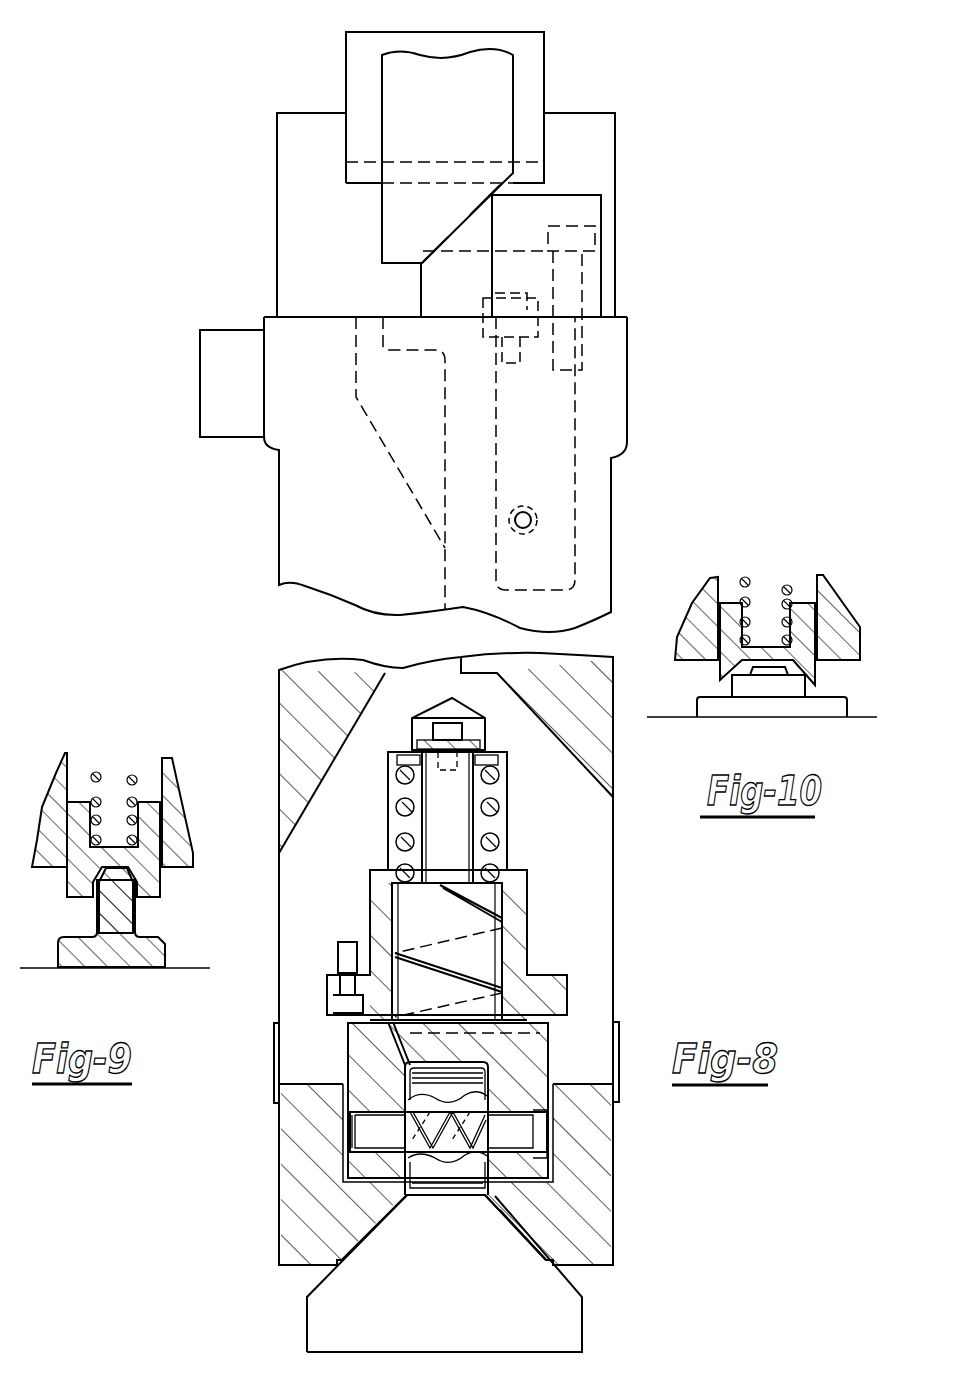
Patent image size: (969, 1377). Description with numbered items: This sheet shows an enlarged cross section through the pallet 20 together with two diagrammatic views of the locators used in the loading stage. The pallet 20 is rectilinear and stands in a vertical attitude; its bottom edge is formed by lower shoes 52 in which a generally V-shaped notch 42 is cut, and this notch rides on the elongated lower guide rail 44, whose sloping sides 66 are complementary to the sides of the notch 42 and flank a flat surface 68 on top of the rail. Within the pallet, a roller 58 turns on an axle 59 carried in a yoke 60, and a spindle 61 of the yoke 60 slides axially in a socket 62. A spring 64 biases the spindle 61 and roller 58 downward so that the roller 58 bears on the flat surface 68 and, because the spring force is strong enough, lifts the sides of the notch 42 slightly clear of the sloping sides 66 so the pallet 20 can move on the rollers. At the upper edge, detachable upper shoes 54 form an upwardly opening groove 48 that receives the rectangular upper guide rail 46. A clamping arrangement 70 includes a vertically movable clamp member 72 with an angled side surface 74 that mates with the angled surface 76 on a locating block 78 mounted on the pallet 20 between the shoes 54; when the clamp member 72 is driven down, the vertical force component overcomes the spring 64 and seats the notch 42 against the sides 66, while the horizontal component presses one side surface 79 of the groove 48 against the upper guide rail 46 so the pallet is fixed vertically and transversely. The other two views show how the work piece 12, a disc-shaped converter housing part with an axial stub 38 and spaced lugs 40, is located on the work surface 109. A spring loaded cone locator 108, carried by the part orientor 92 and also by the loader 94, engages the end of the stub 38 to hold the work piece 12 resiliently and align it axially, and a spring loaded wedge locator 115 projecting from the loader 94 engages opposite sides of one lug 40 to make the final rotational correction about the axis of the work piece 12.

In FIG. 9, the work piece 12 is at (158, 930).
In FIG. 10, the work piece 12 is at (830, 693).
In FIG. 8, the pallet 20 is at (287, 725).
In FIG. 9, the stub 38 is at (125, 913).
In FIG. 10, the lug 40 is at (777, 688).
In FIG. 8, the V-shaped notch 42 is at (507, 1220).
In FIG. 8, the guide rail 44 is at (573, 1313).
In FIG. 8, the upper guide rail 46 is at (545, 98).
In FIG. 8, the groove 48 is at (523, 180).
In FIG. 8, the lower shoe 52 is at (287, 1127).
In FIG. 8, the upper shoe 54 is at (290, 213).
In FIG. 8, the roller 58 is at (508, 1086).
In FIG. 8, the axle 59 is at (363, 1133).
In FIG. 8, the yoke 60 is at (353, 1057).
In FIG. 8, the spindle 61 is at (488, 962).
In FIG. 8, the socket 62 is at (500, 912).
In FIG. 8, the spring 64 is at (505, 782).
In FIG. 8, the sloping sides 66 is at (357, 1243).
In FIG. 8, the flat surface 68 is at (497, 1192).
In FIG. 8, the clamping arrangement 70 is at (513, 80).
In FIG. 8, the clamp member 72 is at (393, 60).
In FIG. 8, the angled side surface 74 is at (447, 250).
In FIG. 8, the angled surface 76 is at (468, 208).
In FIG. 8, the locating block 78 is at (463, 307).
In FIG. 8, the side surface 79 is at (347, 123).
In FIG. 9, the part orientor 92 is at (167, 777).
In FIG. 10, the loader 94 is at (830, 600).
In FIG. 9, the cone locator 108 is at (153, 882).
In FIG. 9, the work surface 109 is at (185, 967).
In FIG. 10, the work surface 109 is at (668, 708).
In FIG. 10, the wedge locator 115 is at (722, 670).